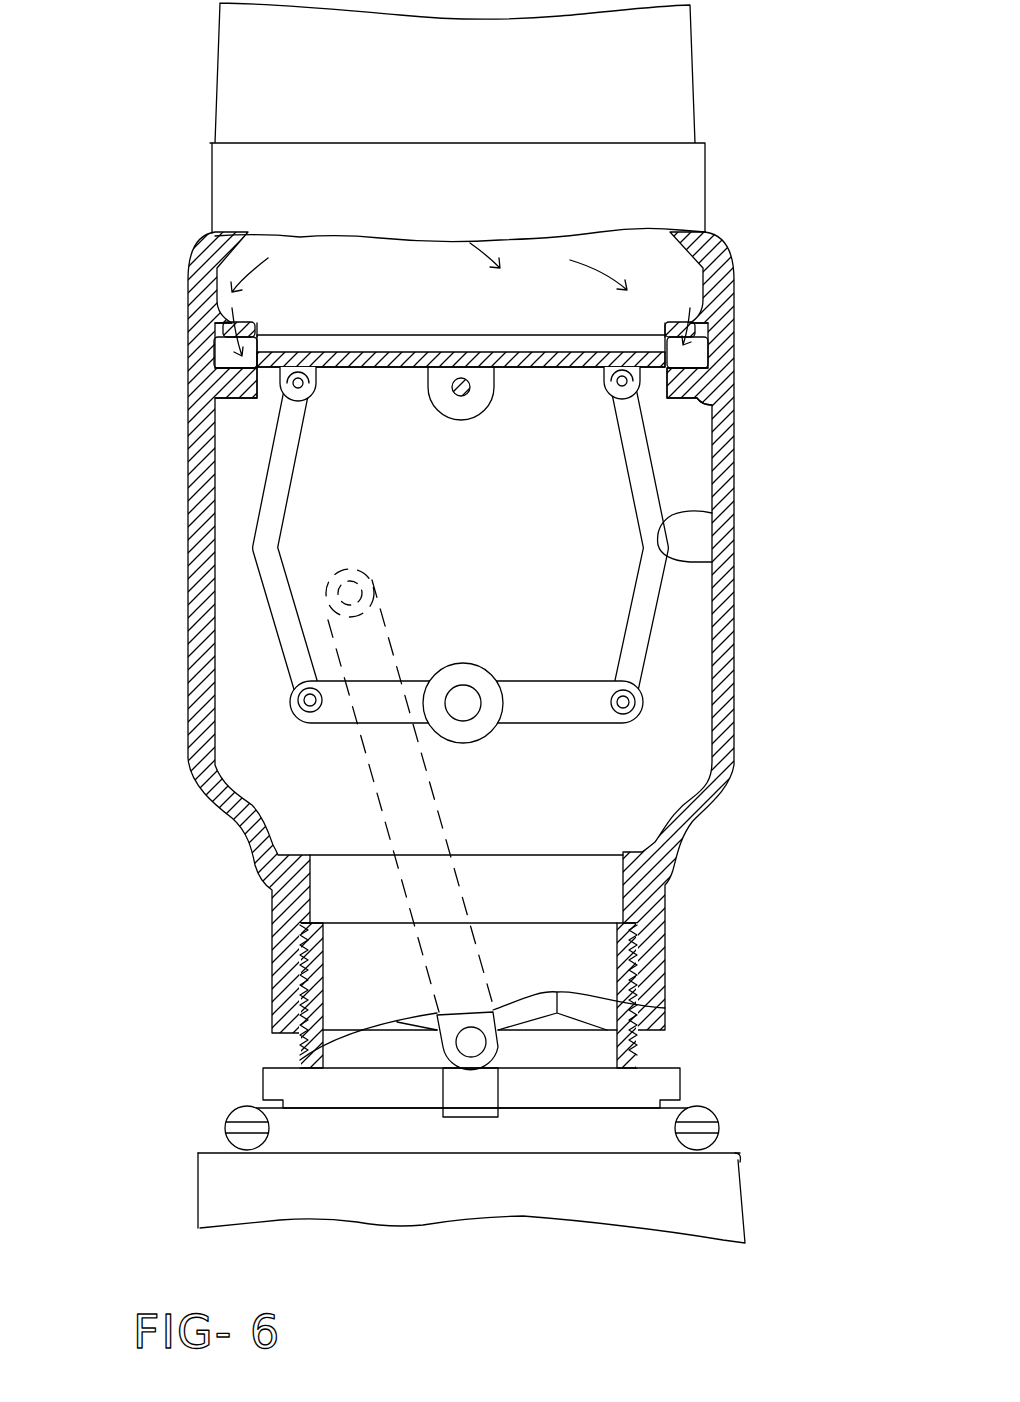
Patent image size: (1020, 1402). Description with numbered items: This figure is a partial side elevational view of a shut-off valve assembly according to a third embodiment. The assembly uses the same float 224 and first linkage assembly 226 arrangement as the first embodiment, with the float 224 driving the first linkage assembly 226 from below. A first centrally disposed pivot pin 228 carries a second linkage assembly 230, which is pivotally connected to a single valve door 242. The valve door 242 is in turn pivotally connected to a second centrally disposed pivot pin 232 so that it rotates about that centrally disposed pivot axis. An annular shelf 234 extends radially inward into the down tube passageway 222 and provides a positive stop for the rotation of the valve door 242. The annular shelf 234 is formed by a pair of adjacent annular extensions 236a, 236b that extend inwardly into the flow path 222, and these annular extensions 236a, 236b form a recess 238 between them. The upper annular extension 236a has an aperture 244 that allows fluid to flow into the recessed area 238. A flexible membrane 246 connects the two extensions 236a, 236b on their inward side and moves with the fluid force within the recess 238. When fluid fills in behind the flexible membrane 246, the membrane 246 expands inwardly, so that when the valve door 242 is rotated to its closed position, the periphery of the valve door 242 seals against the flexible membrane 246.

The down tube passageway 222 is at (709, 521).
The float 224 is at (738, 1162).
The first linkage assembly 226 is at (452, 825).
The first centrally disposed pivot pin 228 is at (460, 706).
The second linkage assembly 230 is at (664, 610).
The second centrally disposed pivot pin 232 is at (478, 415).
The annular shelf 234 is at (710, 303).
The upper annular extension 236a is at (232, 322).
The lower annular extension 236b is at (213, 407).
The recess 238 is at (210, 350).
The valve door 242 is at (573, 350).
The aperture 244 is at (237, 353).
The flexible membrane 246 is at (263, 370).